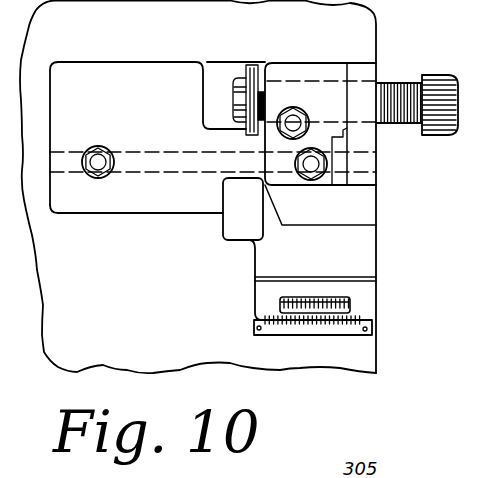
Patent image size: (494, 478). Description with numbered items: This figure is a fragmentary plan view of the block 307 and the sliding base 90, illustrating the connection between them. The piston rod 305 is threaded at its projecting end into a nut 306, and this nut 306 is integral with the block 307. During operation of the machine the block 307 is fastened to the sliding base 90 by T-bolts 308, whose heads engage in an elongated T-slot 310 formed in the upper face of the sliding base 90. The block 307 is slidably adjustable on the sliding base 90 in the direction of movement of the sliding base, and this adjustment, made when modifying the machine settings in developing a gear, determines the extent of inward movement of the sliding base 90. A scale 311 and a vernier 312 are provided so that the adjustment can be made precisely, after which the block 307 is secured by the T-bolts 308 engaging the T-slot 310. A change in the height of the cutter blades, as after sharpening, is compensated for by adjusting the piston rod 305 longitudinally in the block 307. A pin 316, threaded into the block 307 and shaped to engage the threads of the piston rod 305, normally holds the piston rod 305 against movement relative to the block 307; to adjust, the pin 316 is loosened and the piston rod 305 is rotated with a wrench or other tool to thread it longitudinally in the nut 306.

The sliding base 90 is at (273, 355).
The piston rod 305 is at (435, 85).
The nut 306 is at (302, 75).
The block 307 is at (168, 68).
The T-bolts 308 is at (106, 170).
The T-slot 310 is at (147, 152).
The scale 311 is at (358, 330).
The vernier 312 is at (350, 308).
The pin 316 is at (283, 132).